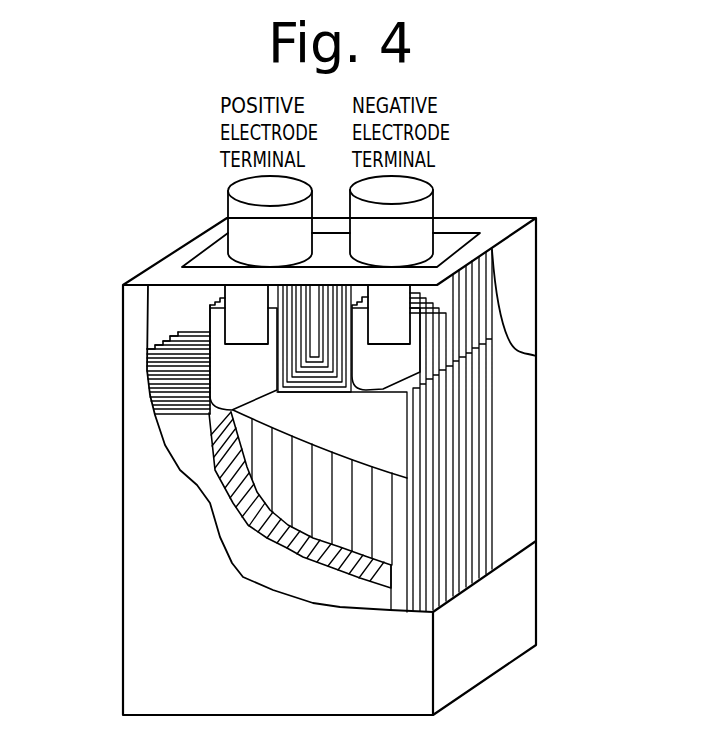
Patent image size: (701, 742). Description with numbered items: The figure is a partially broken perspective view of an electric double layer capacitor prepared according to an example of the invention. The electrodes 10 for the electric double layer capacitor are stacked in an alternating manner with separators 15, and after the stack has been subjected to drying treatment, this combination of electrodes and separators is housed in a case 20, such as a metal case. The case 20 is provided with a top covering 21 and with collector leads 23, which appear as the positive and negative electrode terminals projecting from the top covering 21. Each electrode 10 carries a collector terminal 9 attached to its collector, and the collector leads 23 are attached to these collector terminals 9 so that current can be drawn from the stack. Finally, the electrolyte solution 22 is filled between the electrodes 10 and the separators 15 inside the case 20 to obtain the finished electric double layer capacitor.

The collector terminal 9 is at (238, 378).
The electrode for an electric double layer capacitor 10 is at (155, 403).
The separator 15 is at (280, 471).
The case 20 is at (137, 657).
The top covering 21 is at (453, 243).
The electrolyte solution 22 is at (517, 507).
The collector lead 23 is at (235, 323).